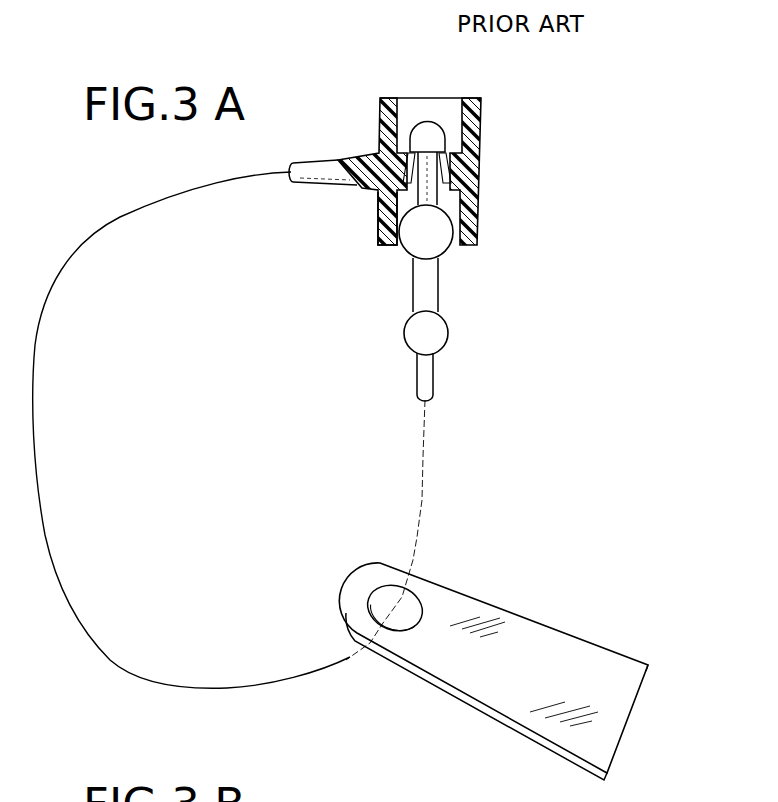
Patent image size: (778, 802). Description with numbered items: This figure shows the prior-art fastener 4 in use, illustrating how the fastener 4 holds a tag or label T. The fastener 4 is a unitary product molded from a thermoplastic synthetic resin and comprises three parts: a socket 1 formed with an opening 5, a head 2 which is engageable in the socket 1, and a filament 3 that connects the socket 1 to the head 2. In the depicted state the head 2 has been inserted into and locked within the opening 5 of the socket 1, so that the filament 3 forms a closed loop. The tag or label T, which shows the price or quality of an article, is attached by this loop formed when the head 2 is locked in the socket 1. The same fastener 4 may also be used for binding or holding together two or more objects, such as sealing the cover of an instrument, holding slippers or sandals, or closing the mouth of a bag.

The socket 1 is at (368, 203).
The head 2 is at (445, 206).
The filament 3 is at (103, 655).
The fastener 4 is at (437, 378).
The opening 5 is at (376, 231).
The tag or label T is at (521, 625).